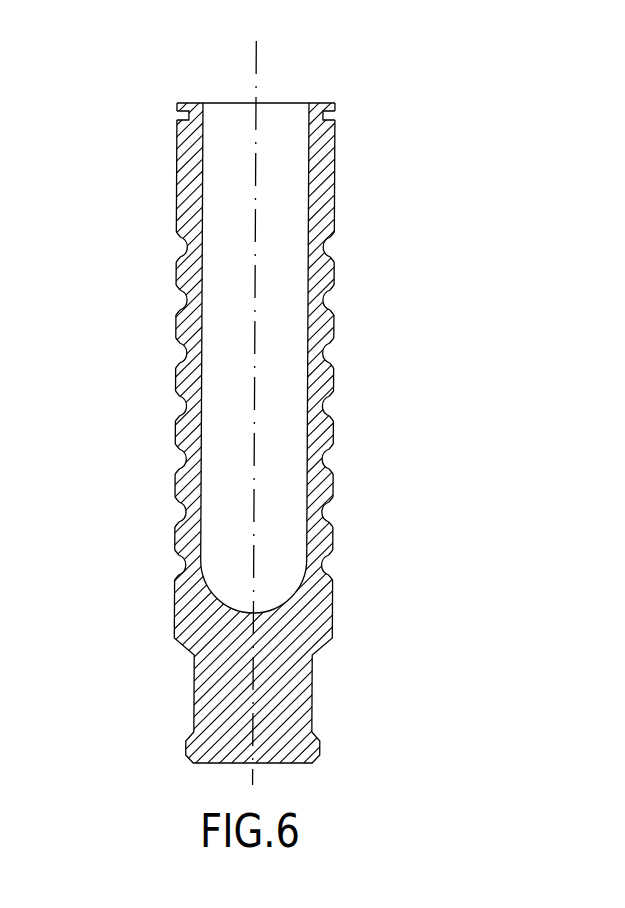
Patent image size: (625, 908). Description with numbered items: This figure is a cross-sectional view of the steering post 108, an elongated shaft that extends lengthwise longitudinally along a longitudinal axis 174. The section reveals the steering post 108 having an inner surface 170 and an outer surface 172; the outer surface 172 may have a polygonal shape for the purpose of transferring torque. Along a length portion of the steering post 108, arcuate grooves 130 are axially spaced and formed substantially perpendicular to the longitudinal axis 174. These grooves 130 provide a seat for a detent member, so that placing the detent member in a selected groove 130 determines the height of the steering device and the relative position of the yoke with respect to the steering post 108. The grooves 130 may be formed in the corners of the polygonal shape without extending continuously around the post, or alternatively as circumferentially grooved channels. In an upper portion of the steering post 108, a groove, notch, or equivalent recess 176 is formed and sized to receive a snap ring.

The steering post 108 is at (271, 454).
The arcuate grooves 130 is at (327, 303).
The inner surface 170 is at (300, 178).
The outer surface 172 is at (168, 208).
The longitudinal axis 174 is at (255, 67).
The recess 176 is at (323, 117).